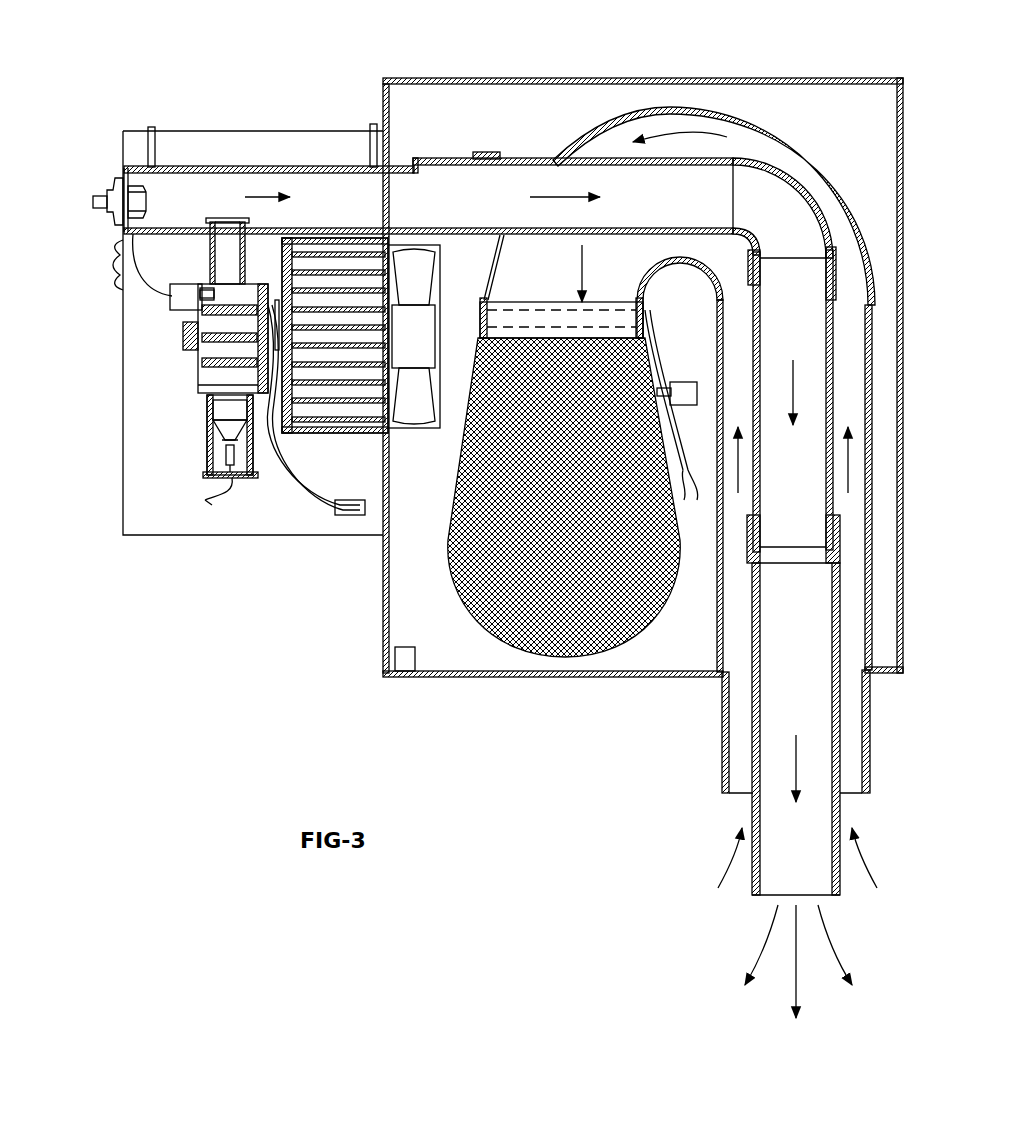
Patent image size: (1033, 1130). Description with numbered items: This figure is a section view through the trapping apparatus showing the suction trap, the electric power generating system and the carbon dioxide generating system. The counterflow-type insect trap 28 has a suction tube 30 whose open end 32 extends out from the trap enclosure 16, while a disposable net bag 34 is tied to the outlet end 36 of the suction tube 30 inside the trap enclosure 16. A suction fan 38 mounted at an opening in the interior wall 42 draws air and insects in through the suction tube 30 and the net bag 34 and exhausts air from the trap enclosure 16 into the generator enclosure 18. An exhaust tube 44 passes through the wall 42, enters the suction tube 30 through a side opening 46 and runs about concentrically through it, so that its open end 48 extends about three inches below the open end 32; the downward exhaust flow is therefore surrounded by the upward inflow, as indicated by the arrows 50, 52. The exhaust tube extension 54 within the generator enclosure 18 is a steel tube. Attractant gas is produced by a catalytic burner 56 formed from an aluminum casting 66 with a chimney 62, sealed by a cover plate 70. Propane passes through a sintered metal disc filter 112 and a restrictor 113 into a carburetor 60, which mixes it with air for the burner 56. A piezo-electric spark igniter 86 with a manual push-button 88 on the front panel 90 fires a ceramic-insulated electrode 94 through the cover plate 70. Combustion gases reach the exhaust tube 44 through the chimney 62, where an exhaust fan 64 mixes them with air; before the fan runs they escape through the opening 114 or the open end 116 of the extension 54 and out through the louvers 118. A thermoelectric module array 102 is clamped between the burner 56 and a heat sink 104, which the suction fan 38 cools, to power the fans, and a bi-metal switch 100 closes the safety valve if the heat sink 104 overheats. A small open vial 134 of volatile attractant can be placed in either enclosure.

The trap enclosure 16 is at (652, 76).
The generator enclosure 18 is at (320, 130).
The counterflow-type insect trap 28 is at (790, 120).
The suction tube 30 is at (627, 115).
The open end of suction tube 32 is at (735, 793).
The disposable net bag 34 is at (550, 640).
The outlet end of suction tube 36 is at (494, 285).
The suction fan 38 is at (428, 290).
The interior wall 42 is at (384, 596).
The exhaust tube 44 is at (232, 163).
The side opening 46 is at (487, 150).
The open end of exhaust tube 48 is at (833, 898).
The exhaust flow arrows 50 is at (765, 946).
The inflow arrows 52 is at (725, 880).
The exhaust tube extension 54 is at (273, 168).
The catalytic burner 56 is at (165, 400).
The carburetor 60 is at (215, 435).
The chimney 62 is at (210, 280).
The exhaust fan 64 is at (146, 210).
The aluminum casting 66 is at (275, 430).
The cover plate 70 is at (200, 360).
The piezo-electric spark igniter 86 is at (113, 187).
The manual push-button 88 is at (93, 200).
The front panel 90 is at (123, 470).
The ceramic-insulated electrode 94 is at (173, 300).
The bi-metal switch 100 is at (187, 333).
The thermoelectric module array 102 is at (278, 293).
The heat sink 104 is at (362, 440).
The sintered metal disc filter 112 is at (232, 478).
The restrictor 113 is at (227, 433).
The opening in extension 114 is at (167, 167).
The open end of extension 116 is at (124, 172).
The louvers 118 is at (118, 268).
The open vial 134 is at (415, 663).